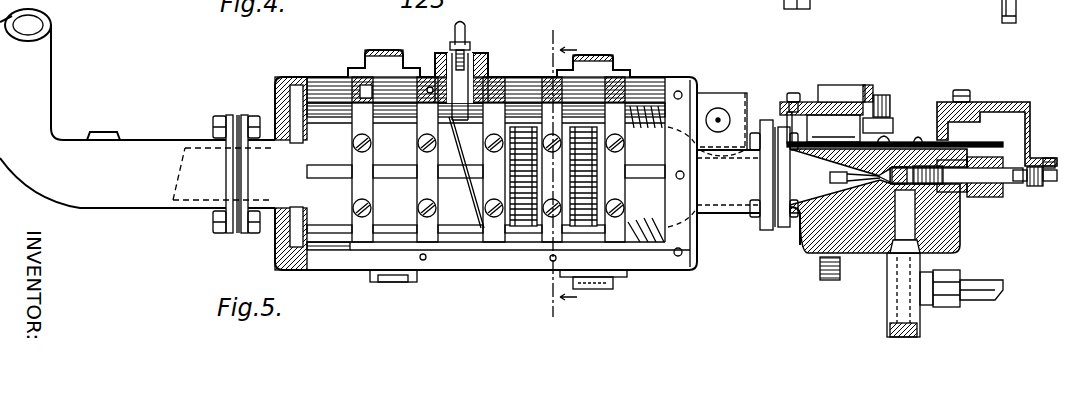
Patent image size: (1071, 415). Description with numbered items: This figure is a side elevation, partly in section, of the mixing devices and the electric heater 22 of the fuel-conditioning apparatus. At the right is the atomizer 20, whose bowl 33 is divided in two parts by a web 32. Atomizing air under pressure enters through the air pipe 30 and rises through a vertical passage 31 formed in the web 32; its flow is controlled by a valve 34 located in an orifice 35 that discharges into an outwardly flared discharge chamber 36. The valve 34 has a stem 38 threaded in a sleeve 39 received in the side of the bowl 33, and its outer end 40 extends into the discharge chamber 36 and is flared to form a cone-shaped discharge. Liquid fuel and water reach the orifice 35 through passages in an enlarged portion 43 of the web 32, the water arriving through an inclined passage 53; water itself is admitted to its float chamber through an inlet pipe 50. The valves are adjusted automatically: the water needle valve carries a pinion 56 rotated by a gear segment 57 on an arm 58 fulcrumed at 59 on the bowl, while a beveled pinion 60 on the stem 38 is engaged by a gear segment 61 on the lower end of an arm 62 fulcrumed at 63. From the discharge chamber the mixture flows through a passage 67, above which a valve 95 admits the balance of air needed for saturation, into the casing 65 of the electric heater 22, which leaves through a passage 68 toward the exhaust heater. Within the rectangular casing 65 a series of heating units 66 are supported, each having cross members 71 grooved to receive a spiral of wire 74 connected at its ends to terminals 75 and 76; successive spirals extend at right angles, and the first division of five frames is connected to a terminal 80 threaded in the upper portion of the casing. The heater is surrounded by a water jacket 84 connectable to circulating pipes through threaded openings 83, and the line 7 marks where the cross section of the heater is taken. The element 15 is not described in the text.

The passage 68 is at (105, 200).
The threaded openings 83 is at (273, 90).
The water jacket 84 is at (307, 257).
The electric heater 22 is at (493, 250).
The terminal 80 is at (468, 70).
The cross members 71 is at (498, 112).
The section line 7— 7 is at (565, 175).
The casing 65 is at (633, 82).
The terminal 76 is at (500, 120).
The terminal 75 is at (548, 125).
The spring 15 is at (630, 120).
The spiral of wire 74 is at (600, 162).
The heating units 66 is at (552, 253).
The valve 95 is at (730, 103).
The discharge chamber 36 is at (797, 163).
The passage 67 is at (733, 207).
The valve 34 is at (800, 227).
The bowl 33 is at (802, 240).
The outer end 40 is at (840, 180).
The inlet pipe 50 is at (822, 270).
The air pipe 30 is at (890, 287).
The fulcrum 59 is at (790, 93).
The gear segment 57 is at (838, 87).
The pinion 56 is at (883, 93).
The enlarged portion 43 is at (895, 143).
The fulcrum 63 is at (965, 97).
The arm 62 is at (1018, 102).
The orifice 35 is at (897, 145).
The sleeve 39 is at (970, 155).
The gear segment 61 is at (1050, 156).
The vertical passage 31 is at (905, 212).
The atomizer 20 is at (948, 227).
The web 32 is at (942, 243).
The stem 38 is at (1017, 184).
The beveled pinion 60 is at (1040, 187).
The arm 58 is at (823, 127).
The inclined passage 53 is at (880, 123).